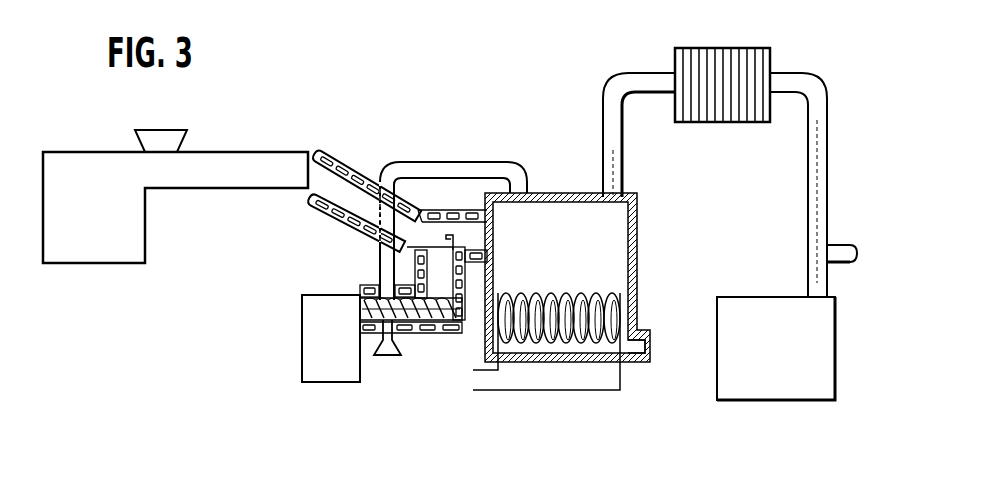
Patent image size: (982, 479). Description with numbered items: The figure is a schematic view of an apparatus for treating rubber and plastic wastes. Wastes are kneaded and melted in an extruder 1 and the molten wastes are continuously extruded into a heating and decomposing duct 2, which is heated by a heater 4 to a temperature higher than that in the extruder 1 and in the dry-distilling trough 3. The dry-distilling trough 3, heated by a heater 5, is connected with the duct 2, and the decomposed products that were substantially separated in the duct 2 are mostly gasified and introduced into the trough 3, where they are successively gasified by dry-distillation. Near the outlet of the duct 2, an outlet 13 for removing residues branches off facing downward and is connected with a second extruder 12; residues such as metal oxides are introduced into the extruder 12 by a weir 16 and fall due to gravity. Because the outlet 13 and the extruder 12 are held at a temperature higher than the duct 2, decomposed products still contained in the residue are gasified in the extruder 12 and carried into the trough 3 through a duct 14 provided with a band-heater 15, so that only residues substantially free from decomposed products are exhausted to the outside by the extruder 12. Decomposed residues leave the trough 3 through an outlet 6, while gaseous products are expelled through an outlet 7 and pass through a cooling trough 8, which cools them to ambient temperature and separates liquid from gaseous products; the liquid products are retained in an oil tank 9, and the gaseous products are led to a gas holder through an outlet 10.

The extruder 1 is at (226, 173).
The heating and decomposing duct 2 is at (315, 173).
The dry-distilling trough 3 is at (638, 260).
The heater for heating the decomposing duct 4 is at (350, 165).
The heater for heating the dry-distilling trough 5 is at (535, 391).
The outlet for removing the decomposed residues 6 is at (643, 348).
The outlet for expelling gaseous products 7 is at (612, 193).
The cooling trough 8 is at (723, 102).
The oil tank 9 is at (808, 388).
The outlet for removing the gaseous products 10 is at (830, 253).
The extruder 12 is at (432, 334).
The outlet for removing residues 13 is at (388, 356).
The duct 14 is at (417, 172).
The band-heater 15 is at (510, 164).
The weir 16 is at (455, 238).